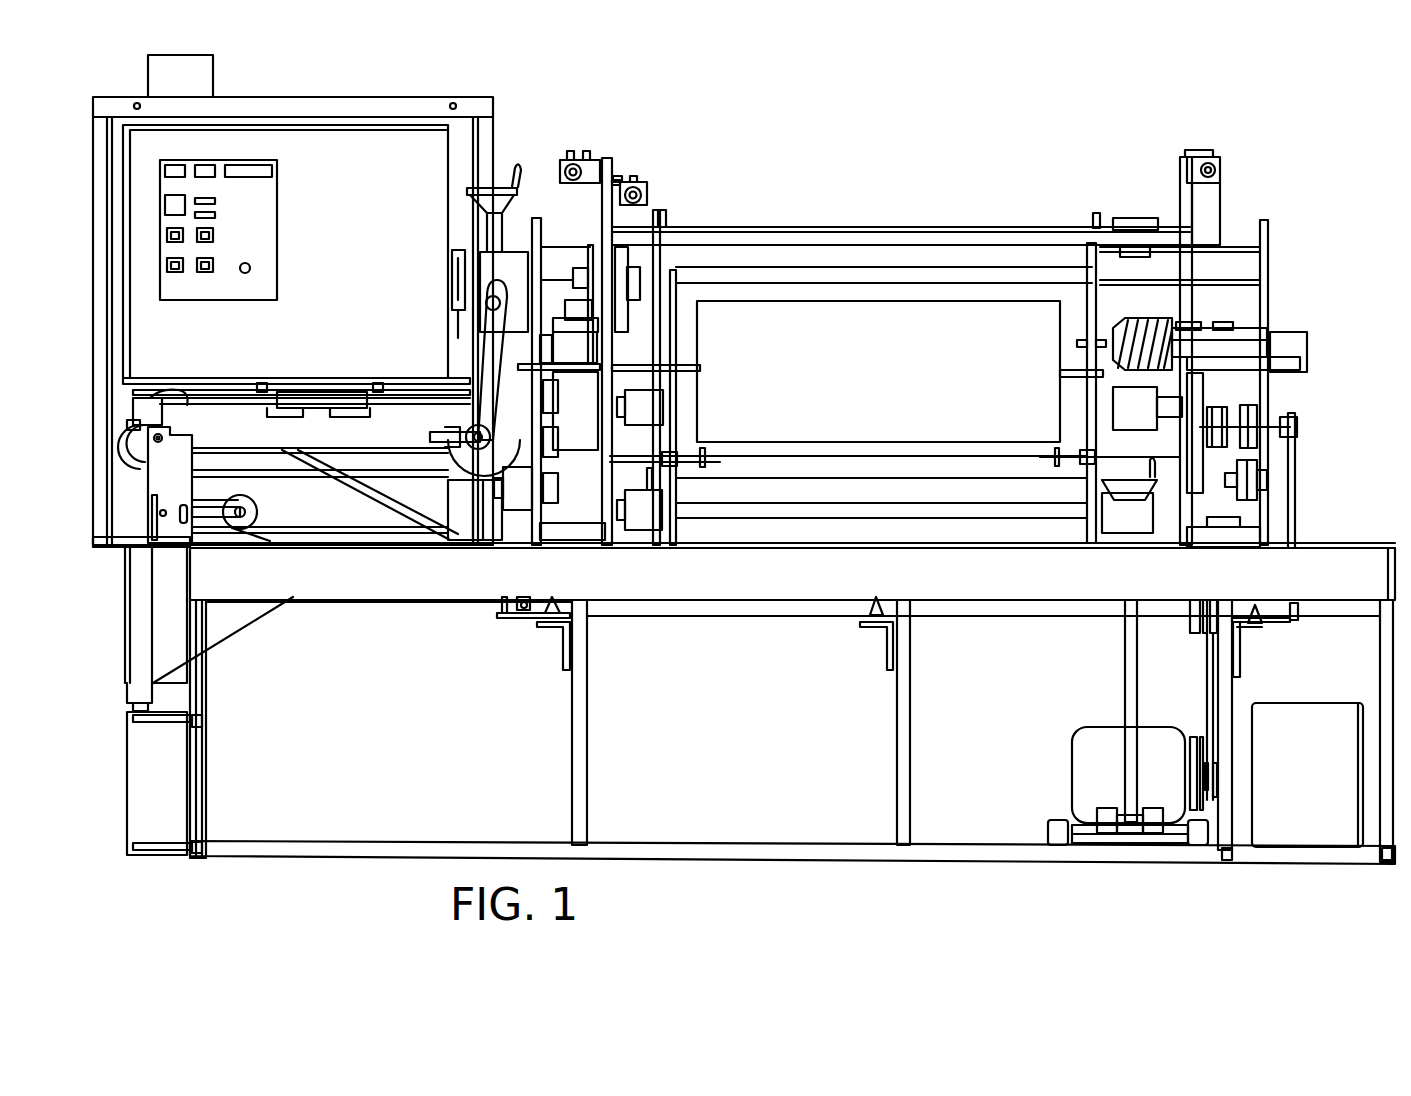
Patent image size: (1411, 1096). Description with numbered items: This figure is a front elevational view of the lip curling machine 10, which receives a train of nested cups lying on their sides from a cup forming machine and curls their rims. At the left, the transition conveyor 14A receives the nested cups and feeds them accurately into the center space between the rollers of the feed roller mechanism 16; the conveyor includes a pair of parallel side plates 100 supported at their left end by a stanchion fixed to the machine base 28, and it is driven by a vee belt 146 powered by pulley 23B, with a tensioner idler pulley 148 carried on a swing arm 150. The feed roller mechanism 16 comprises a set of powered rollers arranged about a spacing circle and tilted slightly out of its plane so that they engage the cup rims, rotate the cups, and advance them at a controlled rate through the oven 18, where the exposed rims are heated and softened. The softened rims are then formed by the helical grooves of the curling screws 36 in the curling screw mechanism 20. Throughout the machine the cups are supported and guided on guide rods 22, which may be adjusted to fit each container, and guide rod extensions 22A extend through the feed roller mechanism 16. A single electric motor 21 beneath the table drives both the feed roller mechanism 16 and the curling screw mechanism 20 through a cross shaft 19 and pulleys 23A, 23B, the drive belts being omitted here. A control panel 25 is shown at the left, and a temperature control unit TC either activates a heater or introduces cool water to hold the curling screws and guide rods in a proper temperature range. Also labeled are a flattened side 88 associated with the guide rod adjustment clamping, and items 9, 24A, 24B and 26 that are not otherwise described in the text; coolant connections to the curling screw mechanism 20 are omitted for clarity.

The lip curling machine 10 is at (938, 150).
The control panel 25 is at (328, 118).
The first side plate 24A is at (533, 218).
The feed roller mechanism 16 is at (572, 150).
The rear frame plate 26 is at (1178, 200).
The curling screw mechanism 20 is at (1232, 200).
The second side plate 24B is at (1270, 232).
The motor 9 is at (1127, 318).
The curling screws 36 is at (1155, 310).
The guide rods 22 is at (645, 363).
The guide rod extensions 22A is at (588, 378).
The oven 18 is at (975, 403).
The flattened side 88 is at (1292, 417).
The machine base 28 is at (1322, 547).
The side plates 100 is at (200, 430).
The transition conveyor 14A is at (312, 378).
The tensioner idler pulley 148 is at (260, 505).
The swing arm 150 is at (212, 522).
The vee belt 146 is at (383, 520).
The pulley 23B is at (522, 618).
The cross shaft 19 is at (968, 618).
The electric motor 21 is at (1085, 728).
The temperature control unit TC is at (1267, 710).
The pulley 23A is at (1308, 623).